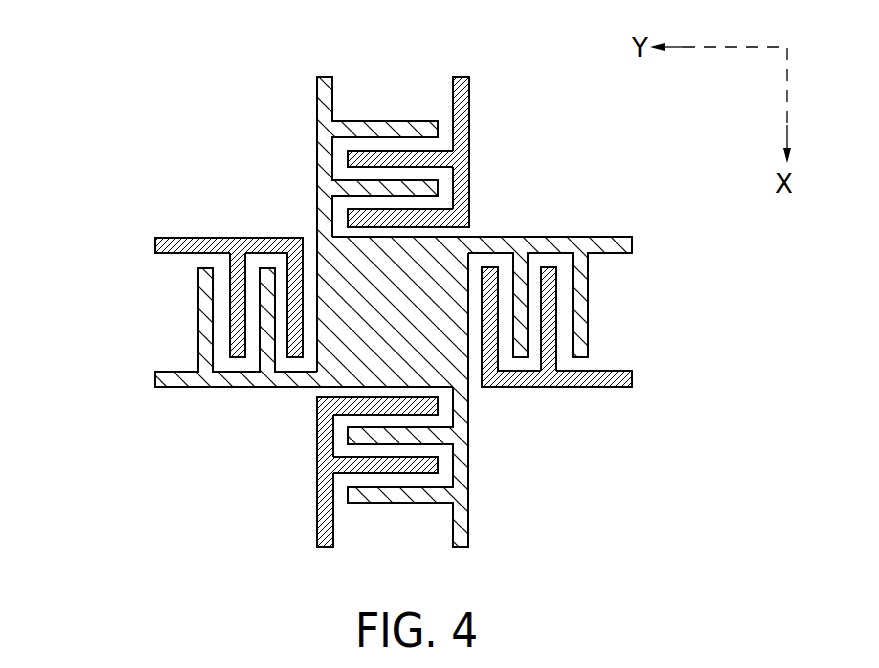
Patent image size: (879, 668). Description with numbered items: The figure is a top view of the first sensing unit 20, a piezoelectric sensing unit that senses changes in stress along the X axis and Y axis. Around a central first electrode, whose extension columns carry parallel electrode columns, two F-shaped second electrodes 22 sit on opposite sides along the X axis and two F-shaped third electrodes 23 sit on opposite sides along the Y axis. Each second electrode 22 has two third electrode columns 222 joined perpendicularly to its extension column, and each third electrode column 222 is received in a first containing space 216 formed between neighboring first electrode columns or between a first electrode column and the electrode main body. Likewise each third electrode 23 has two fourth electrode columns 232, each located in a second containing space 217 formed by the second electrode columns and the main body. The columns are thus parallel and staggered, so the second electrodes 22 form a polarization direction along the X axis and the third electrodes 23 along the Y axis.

The first sensing unit 20 is at (373, 299).
The second electrode 22 is at (491, 97).
The third electrode column 222 is at (386, 158).
The third electrode 23 is at (143, 234).
The fourth electrode column 232 is at (296, 258).
The first containing space 216 is at (329, 130).
The second containing space 217 is at (515, 241).